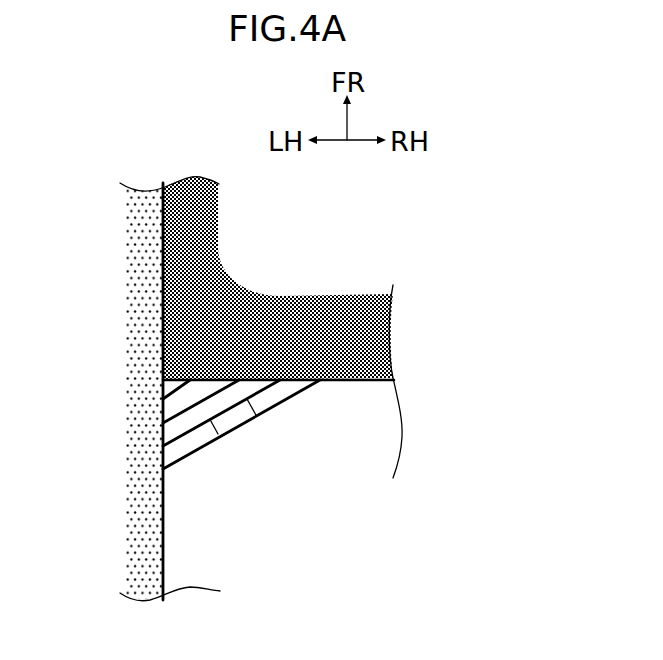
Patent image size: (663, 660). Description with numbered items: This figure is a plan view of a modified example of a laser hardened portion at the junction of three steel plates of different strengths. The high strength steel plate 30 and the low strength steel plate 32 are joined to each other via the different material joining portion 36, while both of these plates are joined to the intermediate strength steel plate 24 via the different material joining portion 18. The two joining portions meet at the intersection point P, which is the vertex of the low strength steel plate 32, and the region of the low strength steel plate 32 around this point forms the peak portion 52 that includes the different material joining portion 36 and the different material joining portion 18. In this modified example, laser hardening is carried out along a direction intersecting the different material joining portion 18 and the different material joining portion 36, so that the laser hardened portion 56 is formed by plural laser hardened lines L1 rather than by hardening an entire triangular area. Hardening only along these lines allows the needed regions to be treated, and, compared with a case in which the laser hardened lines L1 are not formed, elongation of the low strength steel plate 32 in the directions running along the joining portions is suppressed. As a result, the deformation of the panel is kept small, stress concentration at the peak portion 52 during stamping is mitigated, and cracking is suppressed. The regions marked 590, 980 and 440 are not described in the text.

The different material joining portion 18 is at (167, 568).
The intermediate strength steel plate 24 is at (128, 502).
The high strength steel plate 30 is at (368, 286).
The low strength steel plate 32 is at (386, 438).
The different material joining portion 36 is at (379, 383).
The peak portion 52 is at (176, 399).
The laser hardened portion 56 is at (191, 458).
The metal wall region 590 is at (112, 392).
The space above resin member 980 is at (307, 253).
The space below resin member 440 is at (308, 503).
The intersection point P is at (162, 380).
The laser hardened lines L1 is at (220, 434).